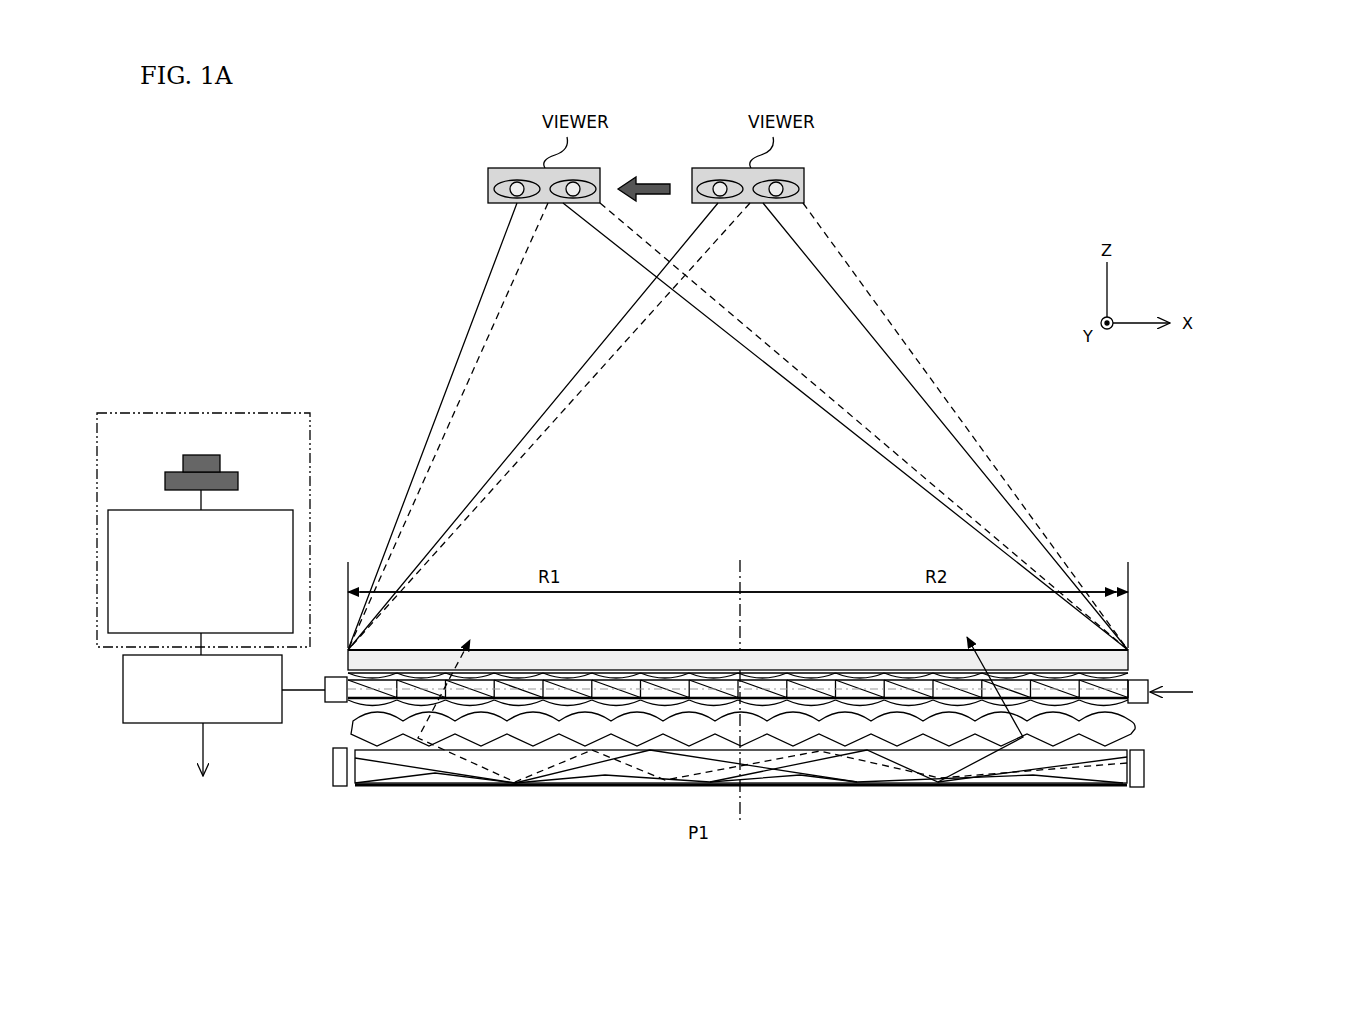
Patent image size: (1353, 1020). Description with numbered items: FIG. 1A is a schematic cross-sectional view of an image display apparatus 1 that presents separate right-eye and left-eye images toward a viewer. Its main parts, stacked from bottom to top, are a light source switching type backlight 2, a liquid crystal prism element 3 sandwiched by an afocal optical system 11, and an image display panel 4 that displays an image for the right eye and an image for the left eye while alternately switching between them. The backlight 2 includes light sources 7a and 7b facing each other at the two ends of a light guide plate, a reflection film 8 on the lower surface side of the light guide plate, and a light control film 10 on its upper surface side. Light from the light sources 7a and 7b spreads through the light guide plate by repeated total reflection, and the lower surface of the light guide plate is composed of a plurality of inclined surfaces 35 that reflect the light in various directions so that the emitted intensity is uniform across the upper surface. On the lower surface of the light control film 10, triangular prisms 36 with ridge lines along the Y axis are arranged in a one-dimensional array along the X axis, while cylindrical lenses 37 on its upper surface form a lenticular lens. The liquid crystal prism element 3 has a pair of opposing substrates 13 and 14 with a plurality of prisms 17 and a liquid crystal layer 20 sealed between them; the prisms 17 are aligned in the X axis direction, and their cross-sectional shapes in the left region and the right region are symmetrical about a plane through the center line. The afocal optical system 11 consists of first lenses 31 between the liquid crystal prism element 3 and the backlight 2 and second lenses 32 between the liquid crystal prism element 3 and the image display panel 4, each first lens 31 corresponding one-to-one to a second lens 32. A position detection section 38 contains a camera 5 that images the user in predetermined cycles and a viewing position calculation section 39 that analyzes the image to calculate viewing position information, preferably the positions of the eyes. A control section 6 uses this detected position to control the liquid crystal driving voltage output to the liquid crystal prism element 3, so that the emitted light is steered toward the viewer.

The image display apparatus 1 is at (298, 252).
The light source switching type backlight 2 is at (1152, 712).
The liquid crystal prism element 3 is at (342, 700).
The image display panel 4 is at (1130, 652).
The camera 5 is at (237, 470).
The control section 6 is at (265, 723).
The light source 7a is at (340, 787).
The light source 7b is at (1137, 788).
The reflection film 8 is at (770, 785).
The light control film 10 is at (1057, 740).
The afocal optical system 11 is at (738, 661).
The opposing substrate 13 is at (543, 680).
The opposing substrate 14 is at (578, 702).
The prism 17 is at (1053, 693).
The liquid crystal layer 20 is at (1005, 690).
The first lens 31 is at (1150, 710).
The second lens 32 is at (1238, 665).
The inclined surface 35 is at (592, 781).
The prism 36 is at (540, 740).
The cylindrical lens 37 is at (483, 717).
The position detection section 38 is at (200, 412).
The viewing position calculation section 39 is at (258, 510).